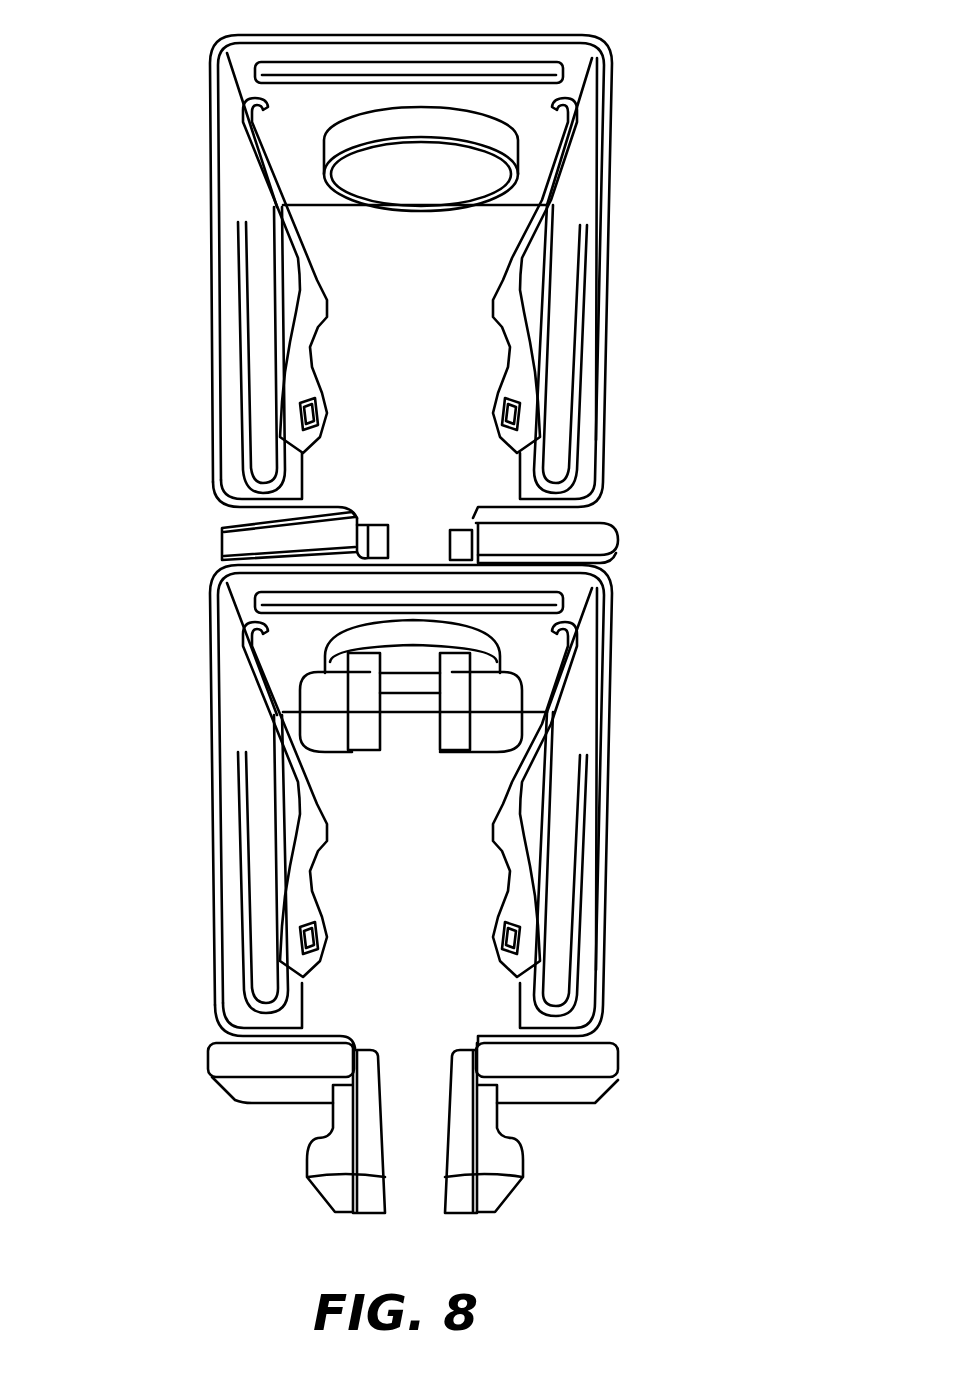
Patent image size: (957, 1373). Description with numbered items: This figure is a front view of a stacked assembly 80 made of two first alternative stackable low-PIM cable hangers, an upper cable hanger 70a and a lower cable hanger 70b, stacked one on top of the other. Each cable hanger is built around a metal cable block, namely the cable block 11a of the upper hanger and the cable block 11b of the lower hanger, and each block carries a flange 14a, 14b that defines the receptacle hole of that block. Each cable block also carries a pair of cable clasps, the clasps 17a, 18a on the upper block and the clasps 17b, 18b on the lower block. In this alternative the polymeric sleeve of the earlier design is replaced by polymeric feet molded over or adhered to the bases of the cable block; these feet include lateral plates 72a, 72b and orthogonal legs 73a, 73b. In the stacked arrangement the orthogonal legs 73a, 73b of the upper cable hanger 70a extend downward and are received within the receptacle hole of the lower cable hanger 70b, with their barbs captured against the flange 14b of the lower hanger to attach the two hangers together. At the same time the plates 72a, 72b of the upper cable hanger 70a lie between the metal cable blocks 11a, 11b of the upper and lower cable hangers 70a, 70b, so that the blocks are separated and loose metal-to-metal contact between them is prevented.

The connector assembly 80 is at (739, 67).
The upper cable hanger 70a is at (117, 175).
The lower cable hanger 70b is at (97, 621).
The metal cable block 11a is at (148, 335).
The metal cable block 11b is at (143, 776).
The flange 14a is at (419, 196).
The flange 14b is at (406, 682).
The cable clasp 17a is at (302, 327).
The cable clasp 17b is at (302, 847).
The cable clasp 18a is at (515, 317).
The cable clasp 18b is at (515, 837).
The lateral plate 72a is at (250, 543).
The lateral plate 72b is at (600, 538).
The orthogonal leg 73a is at (335, 733).
The orthogonal leg 73b is at (490, 733).